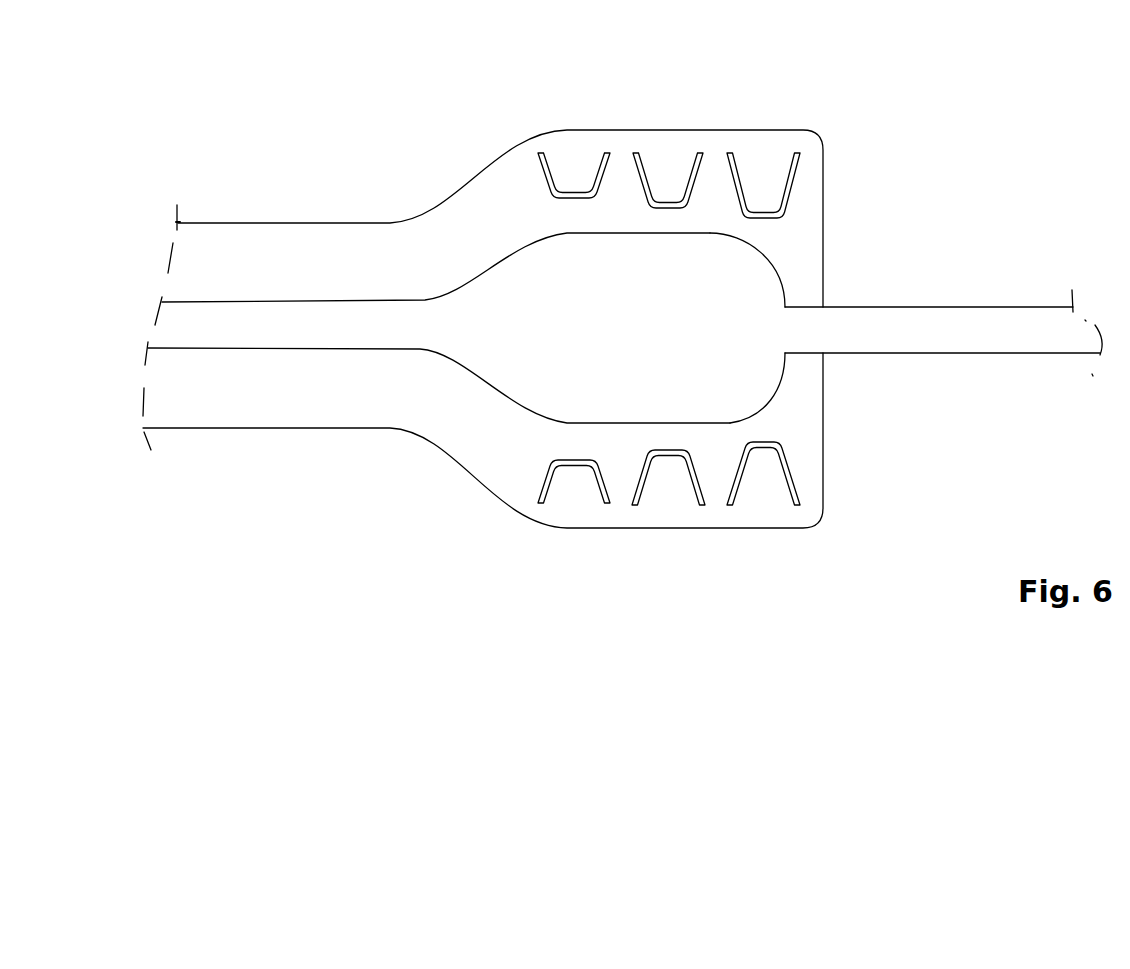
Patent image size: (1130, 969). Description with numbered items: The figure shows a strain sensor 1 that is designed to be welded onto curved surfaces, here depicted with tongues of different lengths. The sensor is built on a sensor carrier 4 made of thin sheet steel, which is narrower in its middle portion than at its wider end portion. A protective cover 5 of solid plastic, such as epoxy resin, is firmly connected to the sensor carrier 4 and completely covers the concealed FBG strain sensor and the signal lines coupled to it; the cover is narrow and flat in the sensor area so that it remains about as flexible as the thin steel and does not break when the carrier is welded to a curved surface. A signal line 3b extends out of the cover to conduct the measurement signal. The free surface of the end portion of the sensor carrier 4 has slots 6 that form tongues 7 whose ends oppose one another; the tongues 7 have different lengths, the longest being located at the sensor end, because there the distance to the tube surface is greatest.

The strain sensor 1 is at (278, 203).
The sensor carrier 4 is at (430, 232).
The protective cover 5 is at (740, 297).
The slots 6 is at (648, 165).
The tongues 7 is at (760, 178).
The signal line 3b is at (978, 320).